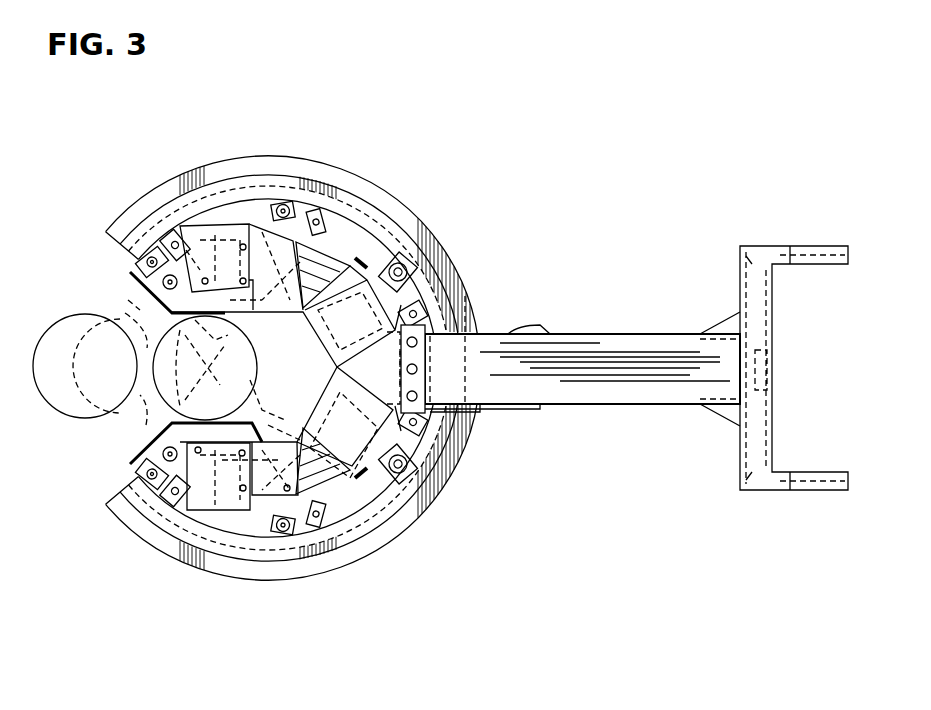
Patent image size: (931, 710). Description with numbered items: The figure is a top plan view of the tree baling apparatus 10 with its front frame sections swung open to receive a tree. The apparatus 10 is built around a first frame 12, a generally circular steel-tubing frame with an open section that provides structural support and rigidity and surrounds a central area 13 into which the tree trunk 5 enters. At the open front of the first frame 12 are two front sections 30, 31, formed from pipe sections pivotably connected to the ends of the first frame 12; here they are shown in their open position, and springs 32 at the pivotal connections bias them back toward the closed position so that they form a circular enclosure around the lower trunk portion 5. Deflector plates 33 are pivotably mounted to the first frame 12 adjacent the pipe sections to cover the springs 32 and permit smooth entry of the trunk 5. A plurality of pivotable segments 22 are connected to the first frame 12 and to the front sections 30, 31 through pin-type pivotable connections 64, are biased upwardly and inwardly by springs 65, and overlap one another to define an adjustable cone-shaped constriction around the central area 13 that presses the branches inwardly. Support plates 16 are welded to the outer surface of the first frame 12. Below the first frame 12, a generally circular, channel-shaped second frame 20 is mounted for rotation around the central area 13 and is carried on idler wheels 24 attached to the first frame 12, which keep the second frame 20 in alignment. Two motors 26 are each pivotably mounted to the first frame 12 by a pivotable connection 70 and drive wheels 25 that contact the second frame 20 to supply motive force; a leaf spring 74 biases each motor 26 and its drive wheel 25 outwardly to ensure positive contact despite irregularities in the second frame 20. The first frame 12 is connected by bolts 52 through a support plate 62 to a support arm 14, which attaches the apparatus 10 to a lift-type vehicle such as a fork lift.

The tree baling apparatus 10 is at (657, 168).
The tree trunk 5 is at (229, 380).
The first frame 12 is at (350, 245).
The central area 13 is at (278, 359).
The support arm 14 is at (628, 407).
The support plates 16 is at (316, 208).
The second frame 20 is at (213, 192).
The pivotable segments 22 is at (303, 442).
The idler wheels 24 is at (282, 200).
The drive wheels 25 is at (413, 300).
The motor 26 is at (440, 262).
The front section 30 is at (212, 437).
The front section 31 is at (205, 255).
The springs 32 is at (168, 240).
The deflector plates 33 is at (125, 313).
The bolts 52 is at (472, 332).
The support plate 62 is at (452, 405).
The pivotable connections 64 is at (370, 442).
The springs 65 is at (430, 465).
The pivotable connection 70 is at (405, 262).
The spring 74 is at (366, 255).